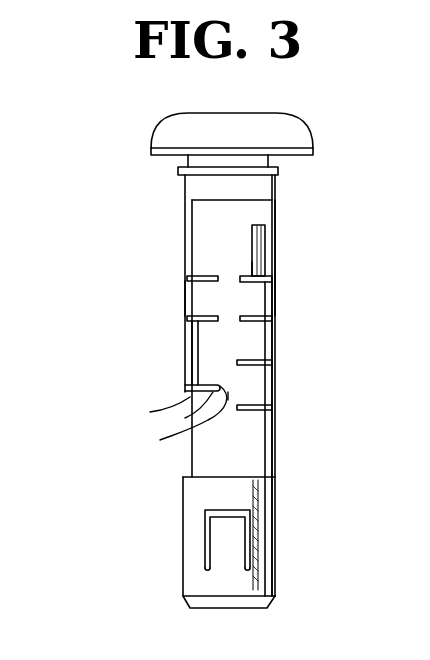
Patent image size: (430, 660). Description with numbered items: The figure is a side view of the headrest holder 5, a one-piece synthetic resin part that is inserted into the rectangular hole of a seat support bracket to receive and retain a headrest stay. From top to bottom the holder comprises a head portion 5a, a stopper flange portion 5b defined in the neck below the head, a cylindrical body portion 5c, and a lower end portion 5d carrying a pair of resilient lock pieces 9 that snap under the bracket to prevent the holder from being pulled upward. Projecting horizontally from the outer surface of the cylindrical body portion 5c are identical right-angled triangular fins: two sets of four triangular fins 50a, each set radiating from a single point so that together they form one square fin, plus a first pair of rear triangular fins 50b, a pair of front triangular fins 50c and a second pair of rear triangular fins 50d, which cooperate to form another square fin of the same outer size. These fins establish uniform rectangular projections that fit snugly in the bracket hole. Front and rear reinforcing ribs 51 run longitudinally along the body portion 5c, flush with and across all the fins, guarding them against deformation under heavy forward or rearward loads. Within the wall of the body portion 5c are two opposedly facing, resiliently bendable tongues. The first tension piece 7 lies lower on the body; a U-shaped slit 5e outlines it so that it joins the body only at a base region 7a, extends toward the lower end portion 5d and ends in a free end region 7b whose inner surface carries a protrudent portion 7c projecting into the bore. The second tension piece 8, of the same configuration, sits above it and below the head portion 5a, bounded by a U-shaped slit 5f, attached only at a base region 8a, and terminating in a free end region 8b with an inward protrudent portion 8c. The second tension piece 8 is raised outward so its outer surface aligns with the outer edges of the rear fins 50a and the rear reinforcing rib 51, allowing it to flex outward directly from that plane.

The headrest holder 5 is at (370, 211).
The head portion 5a is at (296, 124).
The stopper flange portion 5b is at (180, 170).
The cylindrical body portion 5c is at (177, 423).
The lower end portion 5d is at (248, 582).
The U-shaped slit 5e is at (193, 363).
The U-shaped slit 5f is at (255, 250).
The first tension piece 7 is at (183, 380).
The base region 7a is at (190, 336).
The free end region 7b is at (175, 407).
The protrudent portion 7c is at (228, 395).
The second tension piece 8 is at (276, 240).
The base region 8a is at (276, 221).
The free end region 8b is at (273, 279).
The protrudent portion 8c is at (252, 267).
The lower lock piece 9 is at (237, 538).
The triangular fins 50a is at (190, 273).
The rear triangular fins 50b is at (276, 374).
The front triangular fins 50c is at (186, 416).
The rear triangular fins 50d is at (276, 416).
The reinforcing rib 51 is at (186, 296).